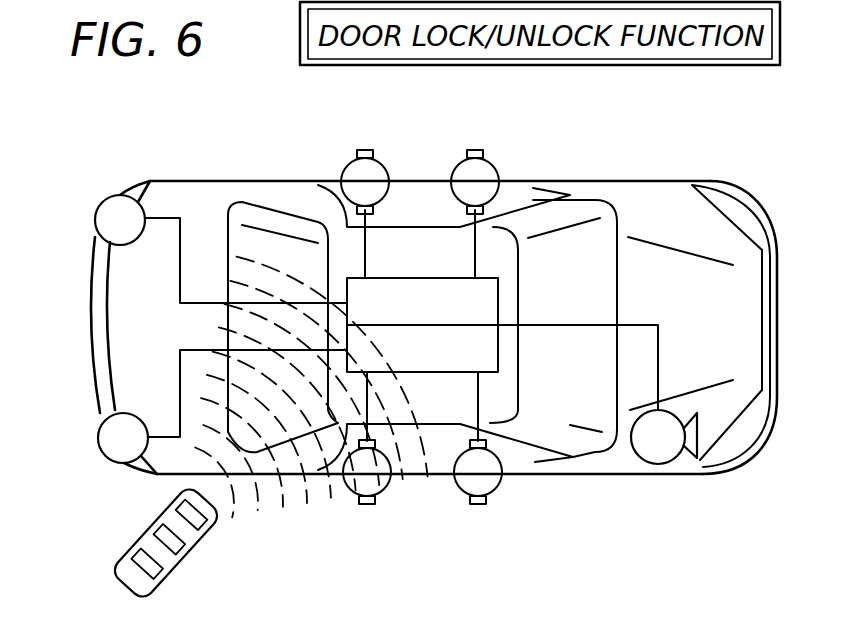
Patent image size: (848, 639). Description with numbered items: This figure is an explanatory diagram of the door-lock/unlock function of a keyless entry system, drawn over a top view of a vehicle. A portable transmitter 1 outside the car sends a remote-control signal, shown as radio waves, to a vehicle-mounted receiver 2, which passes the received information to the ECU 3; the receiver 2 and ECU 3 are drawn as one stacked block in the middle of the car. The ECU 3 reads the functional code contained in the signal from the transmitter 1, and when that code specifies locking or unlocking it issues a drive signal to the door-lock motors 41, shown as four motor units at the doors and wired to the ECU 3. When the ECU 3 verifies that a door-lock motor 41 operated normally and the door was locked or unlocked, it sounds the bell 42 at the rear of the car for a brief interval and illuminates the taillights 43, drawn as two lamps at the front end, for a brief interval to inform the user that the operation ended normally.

The transmitter 1 is at (178, 570).
The vehicle-mounted receiver 2 is at (422, 348).
The ECU 3 is at (422, 301).
The door-lock motor 41 is at (492, 141).
The bell 42 is at (658, 464).
The taillights 43 is at (92, 218).